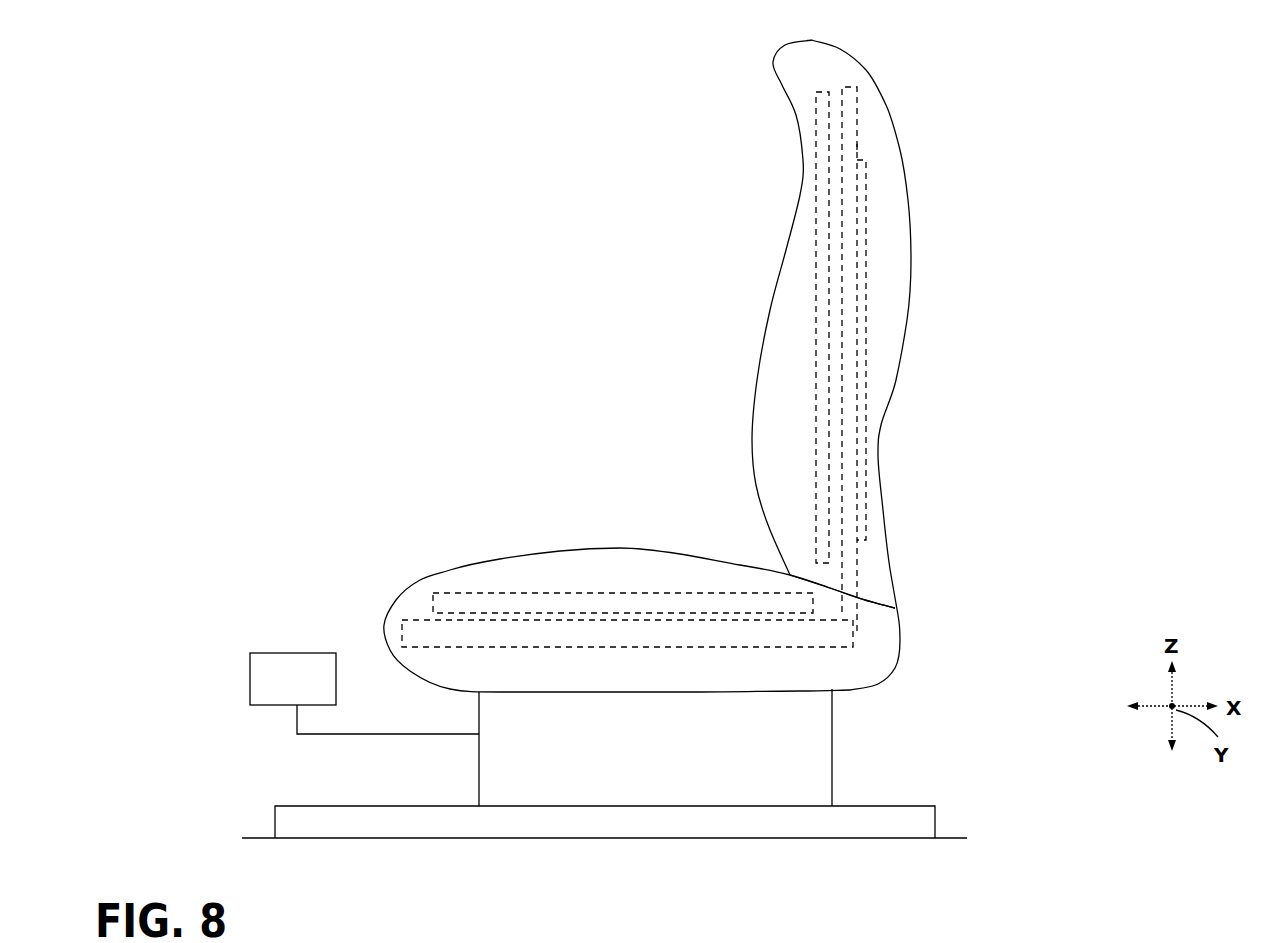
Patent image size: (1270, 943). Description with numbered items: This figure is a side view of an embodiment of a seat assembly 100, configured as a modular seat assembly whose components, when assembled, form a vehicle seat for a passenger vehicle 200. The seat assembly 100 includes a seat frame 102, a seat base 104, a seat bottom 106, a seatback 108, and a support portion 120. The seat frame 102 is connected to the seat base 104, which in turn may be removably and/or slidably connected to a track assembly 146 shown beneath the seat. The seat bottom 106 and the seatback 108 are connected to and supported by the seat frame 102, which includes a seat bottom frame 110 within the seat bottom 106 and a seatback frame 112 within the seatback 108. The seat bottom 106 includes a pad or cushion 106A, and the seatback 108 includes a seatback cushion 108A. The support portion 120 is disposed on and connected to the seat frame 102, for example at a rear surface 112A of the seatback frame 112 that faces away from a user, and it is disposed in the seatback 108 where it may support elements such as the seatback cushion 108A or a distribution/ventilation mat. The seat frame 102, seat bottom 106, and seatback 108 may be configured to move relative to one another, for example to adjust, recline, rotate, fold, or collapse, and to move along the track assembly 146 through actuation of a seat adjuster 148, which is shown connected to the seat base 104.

The seat assembly 100 is at (668, 443).
The seat frame 102 is at (870, 611).
The seat base 104 is at (832, 716).
The seat bottom 106 is at (422, 580).
The pad or cushion 106A is at (488, 593).
The seatback 108 is at (778, 267).
The seatback cushion 108A is at (815, 117).
The seat bottom frame 110 is at (402, 633).
The seatback frame 112 is at (858, 115).
The rear surface 112A is at (866, 144).
The support portion 120 is at (859, 248).
The track assembly 146 is at (910, 806).
The seat adjuster 148 is at (364, 693).
The passenger vehicle 200 is at (587, 292).